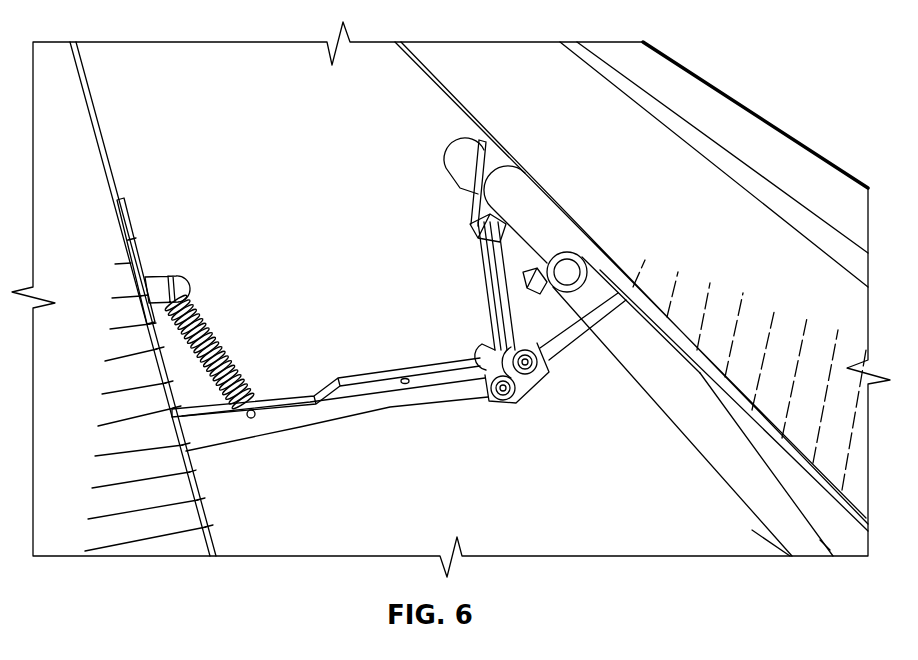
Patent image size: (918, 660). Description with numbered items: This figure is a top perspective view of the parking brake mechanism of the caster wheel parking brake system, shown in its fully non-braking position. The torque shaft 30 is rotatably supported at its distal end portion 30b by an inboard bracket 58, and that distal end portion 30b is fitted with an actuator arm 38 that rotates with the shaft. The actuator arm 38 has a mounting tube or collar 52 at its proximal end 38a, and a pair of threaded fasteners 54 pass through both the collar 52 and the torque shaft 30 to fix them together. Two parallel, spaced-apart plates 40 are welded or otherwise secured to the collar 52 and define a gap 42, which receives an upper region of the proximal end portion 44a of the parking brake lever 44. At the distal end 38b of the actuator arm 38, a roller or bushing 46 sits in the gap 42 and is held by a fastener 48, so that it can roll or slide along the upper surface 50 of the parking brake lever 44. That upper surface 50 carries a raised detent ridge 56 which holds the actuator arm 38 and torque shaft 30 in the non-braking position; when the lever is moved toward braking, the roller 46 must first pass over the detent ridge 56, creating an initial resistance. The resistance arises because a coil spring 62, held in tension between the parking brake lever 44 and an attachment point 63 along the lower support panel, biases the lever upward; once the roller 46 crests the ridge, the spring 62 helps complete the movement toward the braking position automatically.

The torque shaft 30 is at (700, 373).
The distal end portion 30b is at (629, 264).
The actuator arm 38 is at (468, 312).
The proximal end 38a is at (524, 228).
The distal end 38b is at (522, 397).
The plates 40 is at (498, 258).
The gap 42 is at (497, 302).
The parking brake lever 44 is at (335, 426).
The proximal end portion 44a is at (455, 424).
The roller or bushing 46 is at (494, 328).
The fastener 48 is at (530, 384).
The upper surface 50 is at (381, 362).
The mounting tube or collar 52 is at (521, 194).
The threaded fasteners 54 is at (478, 230).
The detent ridge 56 is at (473, 352).
The inboard bracket 58 is at (472, 191).
The coil spring 62 is at (216, 337).
The attachment point 63 is at (145, 278).